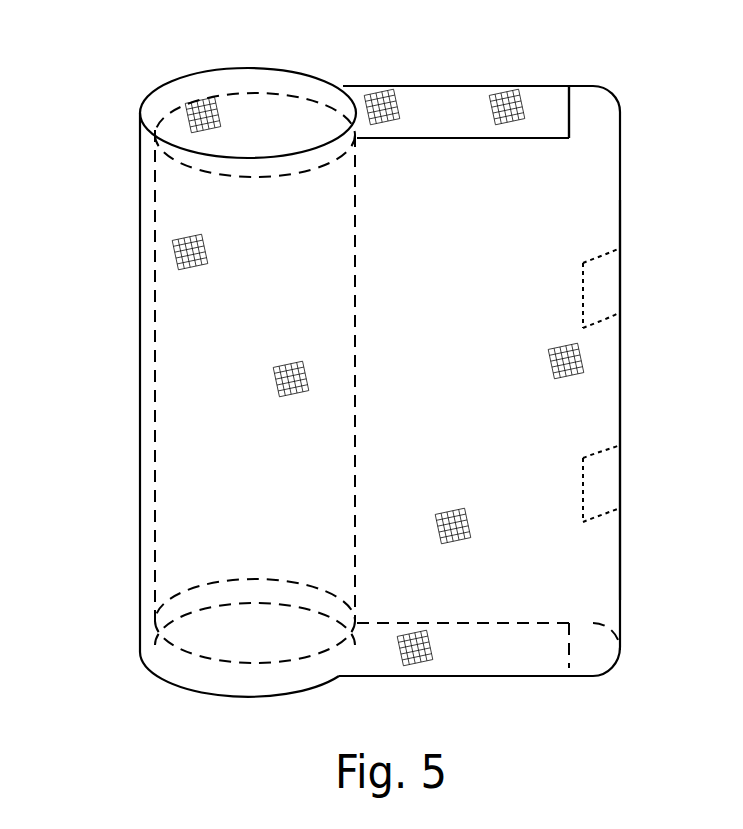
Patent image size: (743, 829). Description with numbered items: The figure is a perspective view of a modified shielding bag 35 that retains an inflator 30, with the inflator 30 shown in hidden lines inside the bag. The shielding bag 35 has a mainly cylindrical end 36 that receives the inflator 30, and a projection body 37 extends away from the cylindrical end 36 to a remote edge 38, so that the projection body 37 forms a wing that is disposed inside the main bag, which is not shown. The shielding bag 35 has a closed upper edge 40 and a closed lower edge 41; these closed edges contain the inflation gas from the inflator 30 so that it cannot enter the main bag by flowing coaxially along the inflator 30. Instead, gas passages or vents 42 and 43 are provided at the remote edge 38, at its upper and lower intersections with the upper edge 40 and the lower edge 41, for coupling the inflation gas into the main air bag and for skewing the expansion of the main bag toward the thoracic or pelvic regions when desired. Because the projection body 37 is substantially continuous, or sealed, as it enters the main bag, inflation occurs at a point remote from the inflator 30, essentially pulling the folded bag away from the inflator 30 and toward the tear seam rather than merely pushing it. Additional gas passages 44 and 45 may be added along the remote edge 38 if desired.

The inflator 30 is at (192, 334).
The shielding bag 35 is at (160, 680).
The cylindrical end 36 is at (139, 187).
The projection body 37 is at (555, 190).
The remote edge 38 is at (620, 383).
The upper edge 40 is at (458, 117).
The lower edge 41 is at (490, 650).
The gas passage 42 is at (586, 115).
The gas passage 43 is at (593, 650).
The additional gas passage 44 is at (610, 283).
The additional gas passage 45 is at (603, 480).